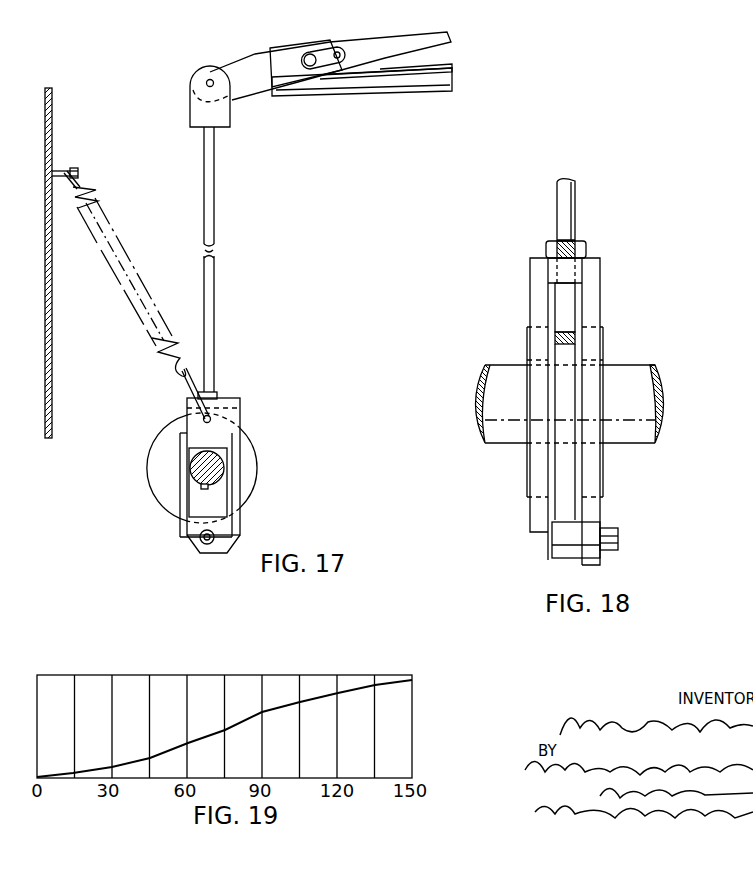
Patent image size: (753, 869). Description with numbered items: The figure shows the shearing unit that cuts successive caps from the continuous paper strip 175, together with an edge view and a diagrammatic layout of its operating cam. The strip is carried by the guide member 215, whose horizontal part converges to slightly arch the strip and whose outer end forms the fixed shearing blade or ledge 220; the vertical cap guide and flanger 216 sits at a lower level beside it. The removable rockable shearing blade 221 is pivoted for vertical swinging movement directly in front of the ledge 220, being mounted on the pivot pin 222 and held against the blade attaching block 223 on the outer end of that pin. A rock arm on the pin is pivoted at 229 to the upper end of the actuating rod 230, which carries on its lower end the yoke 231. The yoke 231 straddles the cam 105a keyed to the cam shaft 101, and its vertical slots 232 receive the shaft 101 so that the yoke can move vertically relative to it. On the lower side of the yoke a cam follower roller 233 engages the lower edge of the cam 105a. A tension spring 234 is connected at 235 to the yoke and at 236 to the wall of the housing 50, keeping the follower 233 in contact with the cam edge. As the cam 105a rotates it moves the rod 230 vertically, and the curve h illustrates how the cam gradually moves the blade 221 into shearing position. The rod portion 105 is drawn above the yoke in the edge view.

In FIG. 17, the housing 50 is at (52, 108).
In FIG. 17, the spring connection point 236 is at (70, 172).
In FIG. 17, the tension spring 234 is at (152, 352).
In FIG. 17, the spring connection point on yoke 235 is at (212, 416).
In FIG. 17, the pivot 229 is at (210, 80).
In FIG. 17, the rockable shearing blade 221 is at (382, 42).
In FIG. 17, the pivot pin 222 is at (308, 56).
In FIG. 17, the blade attaching block 223 is at (318, 70).
In FIG. 17, the fixed shearing blade or ledge 220 is at (413, 85).
In FIG. 17, the guide member 215 is at (441, 70).
In FIG. 17, the strip 175 is at (425, 64).
In FIG. 17, the cap guide and flanger 216 is at (570, 0).
In FIG. 17, the rod 105 is at (212, 173).
In FIG. 18, the rod 105 is at (564, 193).
In FIG. 17, the actuating rod 230 is at (215, 299).
In FIG. 17, the yoke 231 is at (232, 421).
In FIG. 18, the yoke 231 is at (590, 313).
In FIG. 17, the cam 105a is at (248, 478).
In FIG. 18, the cam 105a is at (560, 307).
In FIG. 17, the vertical slots 232 is at (200, 508).
In FIG. 17, the cam shaft 101 is at (200, 475).
In FIG. 18, the cam shaft 101 is at (628, 373).
In FIG. 17, the cam follower roller 233 is at (200, 548).
In FIG. 18, the cam follower roller 233 is at (557, 541).
In FIG. 19, the curve h is at (283, 703).